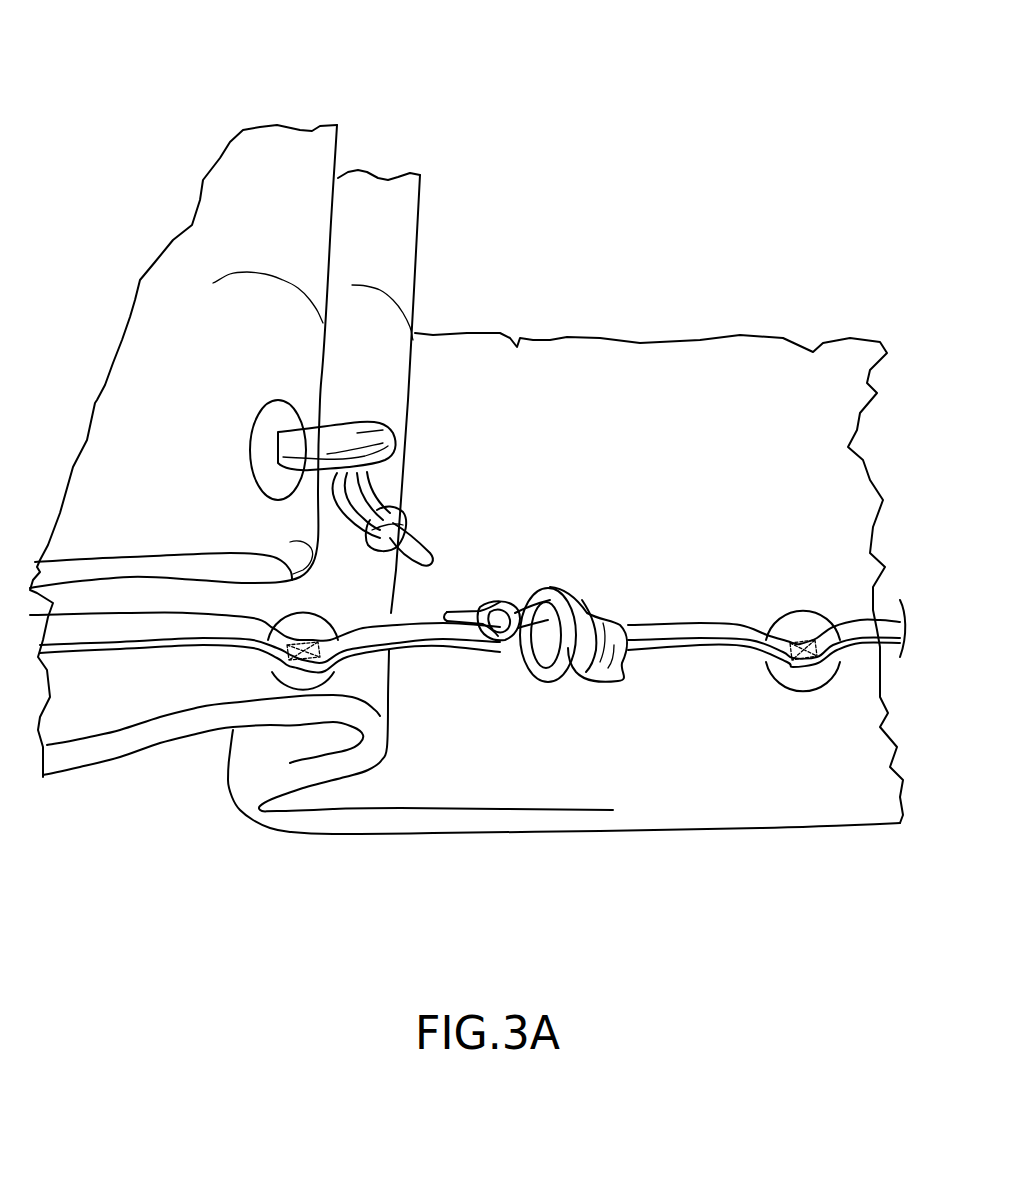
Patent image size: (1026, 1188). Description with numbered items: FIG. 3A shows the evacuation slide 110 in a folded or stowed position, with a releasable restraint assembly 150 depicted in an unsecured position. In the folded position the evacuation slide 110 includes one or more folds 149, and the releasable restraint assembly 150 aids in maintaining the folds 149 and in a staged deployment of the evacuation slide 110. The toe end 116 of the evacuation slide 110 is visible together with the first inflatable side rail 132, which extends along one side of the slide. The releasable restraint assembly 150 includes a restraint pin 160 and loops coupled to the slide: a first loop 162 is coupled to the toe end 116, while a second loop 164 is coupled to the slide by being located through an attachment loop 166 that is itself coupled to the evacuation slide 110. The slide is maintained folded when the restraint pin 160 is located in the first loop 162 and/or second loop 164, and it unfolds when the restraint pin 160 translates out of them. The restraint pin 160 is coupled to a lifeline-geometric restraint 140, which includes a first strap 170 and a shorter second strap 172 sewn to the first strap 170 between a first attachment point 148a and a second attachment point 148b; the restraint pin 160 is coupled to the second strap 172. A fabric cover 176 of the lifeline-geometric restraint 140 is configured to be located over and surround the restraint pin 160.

The evacuation slide 110 is at (150, 80).
The toe end 116 is at (332, 183).
The folds 149 is at (413, 247).
The first inflatable side rail 132 is at (640, 750).
The first strap 170 is at (650, 633).
The first attachment point 148a is at (807, 643).
The second attachment point 148b is at (300, 680).
The first loop 162 is at (383, 423).
The second loop 164 is at (400, 553).
The attachment loop 166 is at (390, 550).
The releasable restraint assembly 150 is at (557, 443).
The restraint pin 160 is at (462, 605).
The second strap 172 is at (523, 600).
The lifeline-geometric restraint 140 is at (680, 473).
The cover 176 is at (587, 667).